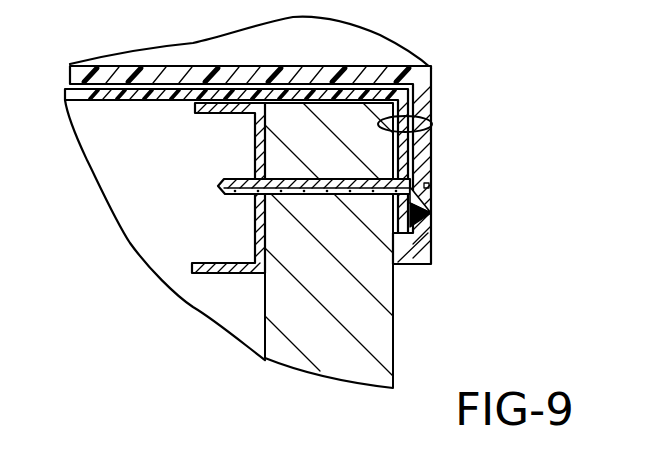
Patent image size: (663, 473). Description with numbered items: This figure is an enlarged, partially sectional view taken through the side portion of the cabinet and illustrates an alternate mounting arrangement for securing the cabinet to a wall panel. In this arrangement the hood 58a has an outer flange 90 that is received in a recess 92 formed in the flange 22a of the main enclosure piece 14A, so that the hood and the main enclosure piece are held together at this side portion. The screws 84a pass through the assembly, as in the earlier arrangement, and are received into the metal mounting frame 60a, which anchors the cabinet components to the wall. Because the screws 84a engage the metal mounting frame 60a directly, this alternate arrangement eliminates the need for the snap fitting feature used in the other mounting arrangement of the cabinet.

The main enclosure piece 14A is at (386, 32).
The flange 22a is at (432, 108).
The hood 58a is at (127, 100).
The metal mounting frame 60a is at (220, 268).
The screws 84a is at (350, 195).
The outer flange 90 is at (412, 158).
The recess 92 is at (408, 122).